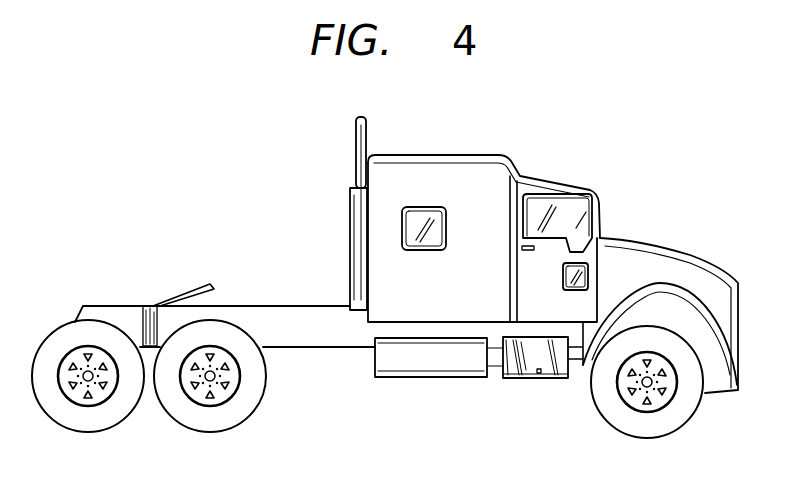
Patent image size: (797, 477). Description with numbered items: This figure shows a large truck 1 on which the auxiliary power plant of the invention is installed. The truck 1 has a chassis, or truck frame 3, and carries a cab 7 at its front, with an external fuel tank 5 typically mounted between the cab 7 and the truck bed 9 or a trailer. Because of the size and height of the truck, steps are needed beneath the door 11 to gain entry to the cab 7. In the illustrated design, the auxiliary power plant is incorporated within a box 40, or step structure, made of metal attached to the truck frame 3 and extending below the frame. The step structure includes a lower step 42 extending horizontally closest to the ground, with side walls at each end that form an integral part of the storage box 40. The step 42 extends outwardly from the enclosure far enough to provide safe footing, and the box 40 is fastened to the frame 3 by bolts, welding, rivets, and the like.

The large truck 1 is at (653, 236).
The truck frame 3 is at (288, 338).
The external fuel tank 5 is at (407, 371).
The cab 7 is at (547, 173).
The truck bed 9 is at (232, 306).
The door 11 is at (508, 290).
The storage box 40 is at (572, 381).
The lower step 42 is at (510, 383).